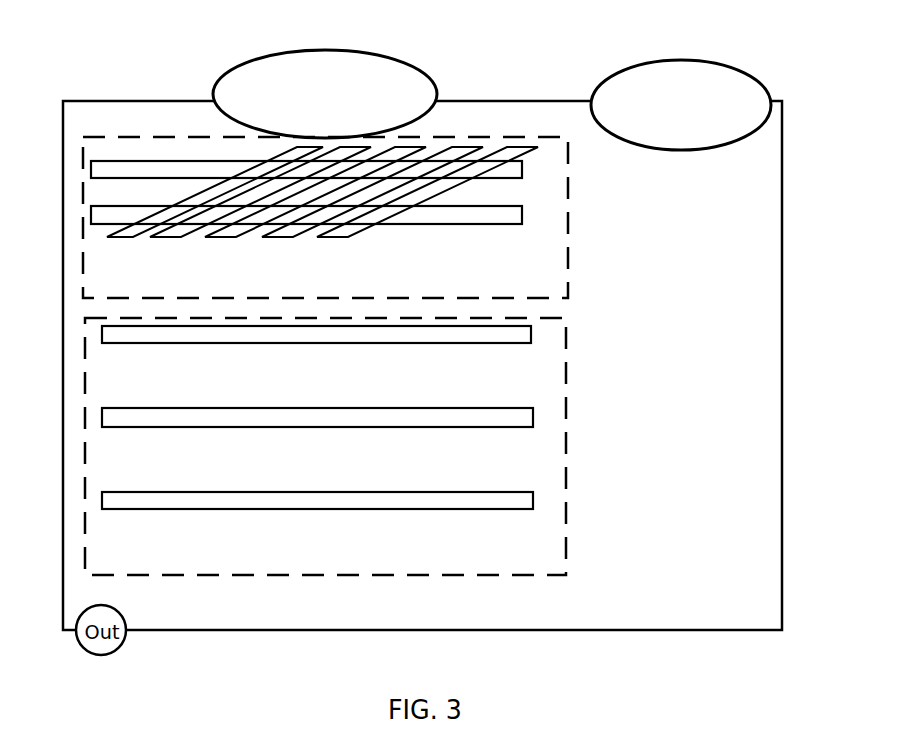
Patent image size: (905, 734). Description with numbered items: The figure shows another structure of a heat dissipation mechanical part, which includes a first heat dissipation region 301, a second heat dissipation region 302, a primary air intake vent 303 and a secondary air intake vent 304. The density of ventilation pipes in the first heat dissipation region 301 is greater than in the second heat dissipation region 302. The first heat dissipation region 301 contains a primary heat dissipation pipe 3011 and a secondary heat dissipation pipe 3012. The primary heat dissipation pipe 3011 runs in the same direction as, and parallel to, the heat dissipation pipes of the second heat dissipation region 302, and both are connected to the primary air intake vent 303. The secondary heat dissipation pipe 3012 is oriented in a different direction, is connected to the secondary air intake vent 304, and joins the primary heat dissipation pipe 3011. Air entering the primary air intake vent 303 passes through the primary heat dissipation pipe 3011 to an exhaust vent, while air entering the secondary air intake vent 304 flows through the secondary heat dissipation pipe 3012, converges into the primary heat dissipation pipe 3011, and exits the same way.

The secondary air intake vent 304 is at (329, 78).
The primary air intake vent 303 is at (686, 89).
The first heat dissipation region 301 is at (375, 217).
The primary heat dissipation pipe 3011 is at (311, 224).
The secondary heat dissipation pipe 3012 is at (322, 218).
The second heat dissipation region 302 is at (374, 446).